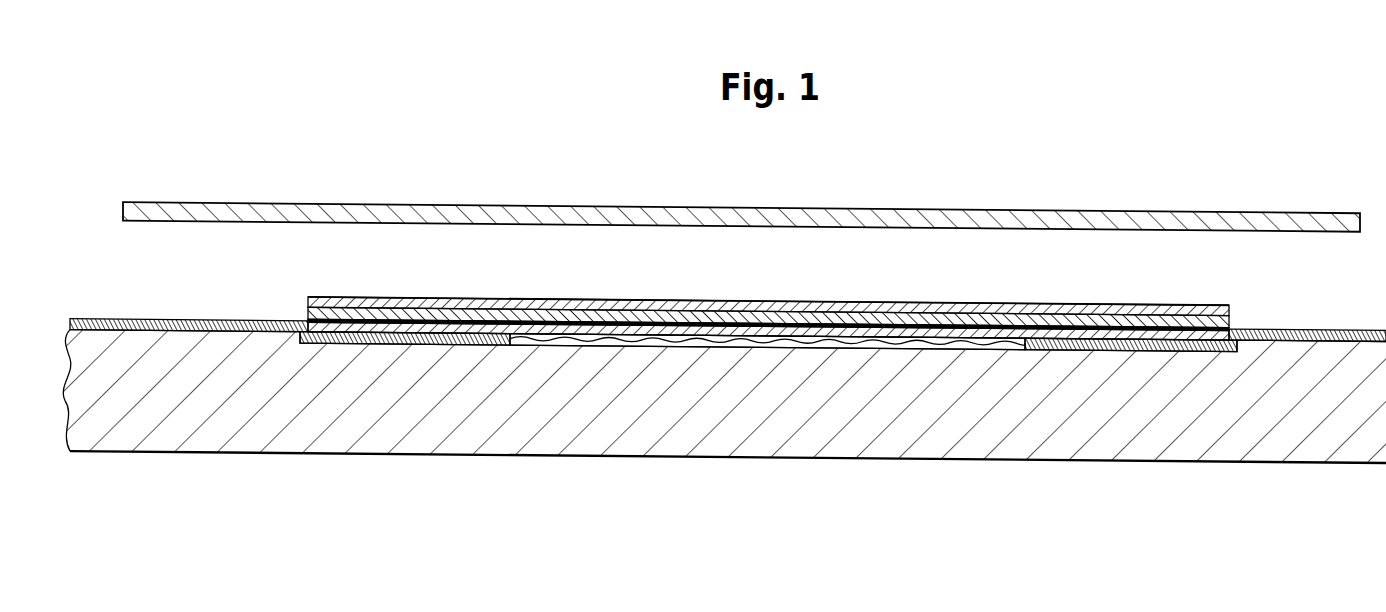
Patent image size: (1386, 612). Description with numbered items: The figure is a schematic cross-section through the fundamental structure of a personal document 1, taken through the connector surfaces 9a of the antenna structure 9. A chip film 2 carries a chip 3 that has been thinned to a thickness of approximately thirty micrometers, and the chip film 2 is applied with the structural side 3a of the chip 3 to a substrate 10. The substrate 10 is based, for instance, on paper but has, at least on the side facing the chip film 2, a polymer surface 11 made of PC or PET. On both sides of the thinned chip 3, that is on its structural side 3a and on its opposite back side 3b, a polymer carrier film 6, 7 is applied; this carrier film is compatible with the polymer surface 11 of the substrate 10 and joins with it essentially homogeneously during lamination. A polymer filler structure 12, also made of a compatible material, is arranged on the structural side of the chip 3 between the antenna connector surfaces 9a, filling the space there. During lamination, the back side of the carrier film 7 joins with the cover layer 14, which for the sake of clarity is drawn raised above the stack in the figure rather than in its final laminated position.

The personal document 1 is at (724, 297).
The chip film 2 is at (815, 378).
The chip 3 is at (1072, 302).
The structural side of the chip 3a is at (918, 345).
The back side of the chip 3b is at (950, 302).
The polymer carrier film 6 is at (780, 300).
The polymer carrier film 7 is at (838, 300).
The antenna structure 9 is at (195, 319).
The connector surfaces of the antenna structure 9a is at (483, 345).
The substrate 10 is at (668, 415).
The polymer surface 11 is at (607, 300).
The polymer filler structure 12 is at (780, 345).
The cover layer 14 is at (360, 212).